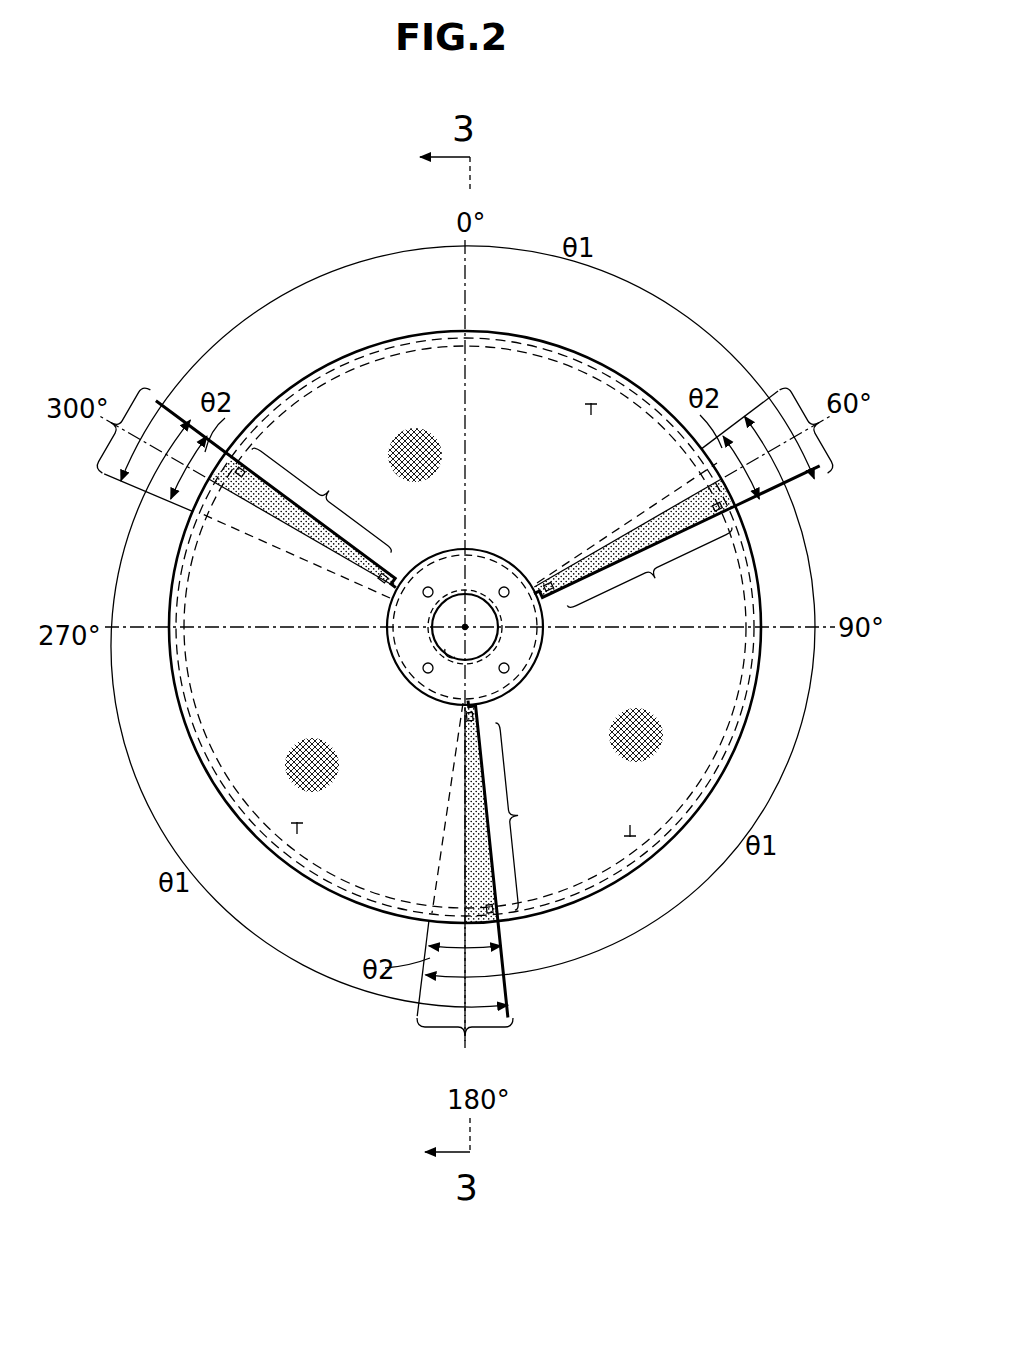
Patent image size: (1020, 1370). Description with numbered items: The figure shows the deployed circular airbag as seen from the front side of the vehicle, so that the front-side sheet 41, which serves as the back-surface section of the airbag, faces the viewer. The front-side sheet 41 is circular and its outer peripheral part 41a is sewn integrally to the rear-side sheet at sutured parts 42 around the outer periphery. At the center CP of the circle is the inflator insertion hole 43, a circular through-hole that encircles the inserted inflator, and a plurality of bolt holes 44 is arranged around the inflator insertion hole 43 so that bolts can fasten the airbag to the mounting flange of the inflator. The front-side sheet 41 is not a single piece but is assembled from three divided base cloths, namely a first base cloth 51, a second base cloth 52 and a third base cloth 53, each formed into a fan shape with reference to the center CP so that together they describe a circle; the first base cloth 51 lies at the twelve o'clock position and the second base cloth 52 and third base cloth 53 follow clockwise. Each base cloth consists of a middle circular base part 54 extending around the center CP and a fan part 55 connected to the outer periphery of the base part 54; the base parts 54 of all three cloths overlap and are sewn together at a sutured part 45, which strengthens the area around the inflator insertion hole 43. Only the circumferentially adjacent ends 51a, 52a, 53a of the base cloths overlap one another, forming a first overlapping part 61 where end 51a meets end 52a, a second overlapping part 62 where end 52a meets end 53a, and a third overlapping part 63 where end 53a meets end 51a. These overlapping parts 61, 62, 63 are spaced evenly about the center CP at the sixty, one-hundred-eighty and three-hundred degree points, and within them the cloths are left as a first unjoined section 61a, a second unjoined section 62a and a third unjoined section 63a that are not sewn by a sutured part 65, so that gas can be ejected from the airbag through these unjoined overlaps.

The front-side sheet 41 is at (204, 218).
The outer peripheral part 41a is at (320, 370).
The sutured part 42 is at (374, 358).
The inflator insertion hole 43 is at (450, 660).
The bolt holes 44 is at (504, 586).
The sutured part 45 is at (545, 660).
The first base cloth 51 is at (527, 392).
The end of first base cloth 51a is at (582, 575).
The second base cloth 52 is at (703, 760).
The end of second base cloth 52a is at (642, 505).
The third base cloth 53 is at (225, 745).
The end of third base cloth 53a is at (360, 550).
The base part 54 is at (443, 572).
The fan part 55 is at (596, 404).
The first overlapping part 61 is at (814, 412).
The first unjoined section 61a is at (677, 537).
The second overlapping part 62 is at (458, 1037).
The second unjoined section 62a is at (514, 859).
The third overlapping part 63 is at (112, 415).
The third unjoined section 63a is at (276, 494).
The sutured part 65 is at (238, 466).
The center CP is at (462, 630).